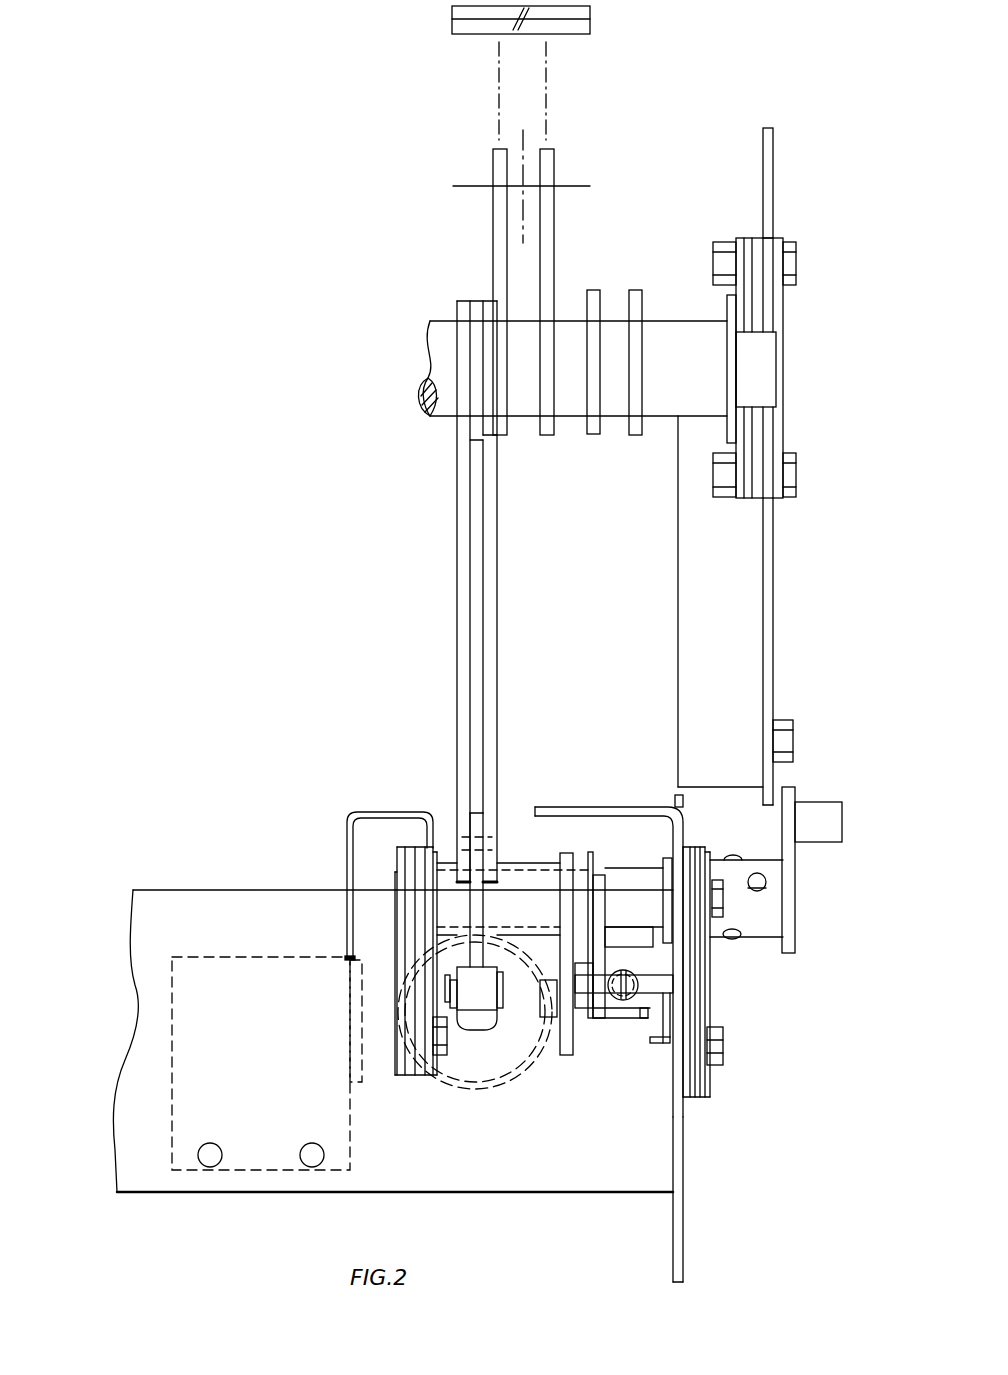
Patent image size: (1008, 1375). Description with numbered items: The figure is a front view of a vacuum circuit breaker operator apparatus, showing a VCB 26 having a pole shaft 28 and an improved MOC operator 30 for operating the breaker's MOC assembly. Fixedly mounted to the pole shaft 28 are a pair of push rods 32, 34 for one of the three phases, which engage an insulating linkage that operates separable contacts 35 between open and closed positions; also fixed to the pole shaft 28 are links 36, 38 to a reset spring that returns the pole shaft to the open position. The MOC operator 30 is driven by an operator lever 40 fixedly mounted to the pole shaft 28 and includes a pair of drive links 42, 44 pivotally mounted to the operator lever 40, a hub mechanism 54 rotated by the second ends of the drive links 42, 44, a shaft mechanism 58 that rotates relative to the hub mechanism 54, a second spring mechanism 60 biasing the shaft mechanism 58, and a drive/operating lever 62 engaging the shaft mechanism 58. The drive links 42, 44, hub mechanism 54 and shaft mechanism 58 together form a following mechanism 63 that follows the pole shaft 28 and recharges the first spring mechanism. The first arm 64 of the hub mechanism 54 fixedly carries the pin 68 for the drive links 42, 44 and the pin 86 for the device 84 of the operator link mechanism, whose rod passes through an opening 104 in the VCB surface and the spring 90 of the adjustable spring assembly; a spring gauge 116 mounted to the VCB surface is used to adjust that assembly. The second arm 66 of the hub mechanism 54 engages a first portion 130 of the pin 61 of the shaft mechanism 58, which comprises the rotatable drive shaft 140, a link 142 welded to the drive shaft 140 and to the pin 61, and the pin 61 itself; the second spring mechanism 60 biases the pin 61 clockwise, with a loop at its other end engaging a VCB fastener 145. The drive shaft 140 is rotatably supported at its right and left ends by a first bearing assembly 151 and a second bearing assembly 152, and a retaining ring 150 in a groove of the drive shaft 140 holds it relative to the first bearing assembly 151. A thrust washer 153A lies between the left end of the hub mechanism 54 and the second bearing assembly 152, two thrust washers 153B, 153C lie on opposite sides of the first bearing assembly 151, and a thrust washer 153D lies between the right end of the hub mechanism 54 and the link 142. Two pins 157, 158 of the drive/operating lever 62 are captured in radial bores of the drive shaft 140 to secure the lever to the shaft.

The VCB 26 is at (760, 1245).
The pole shaft 28 is at (432, 338).
The MOC operator 30 is at (602, 735).
The push rod 32 is at (492, 218).
The push rod 34 is at (556, 226).
The separable contacts 35 is at (578, 34).
The link 36 is at (593, 289).
The link 38 is at (636, 289).
The operator lever 40 is at (480, 300).
The drive link 42 is at (462, 547).
The drive link 44 is at (497, 543).
The hub mechanism 54 is at (508, 838).
The shaft mechanism 58 is at (607, 862).
The second spring mechanism 60 is at (617, 1000).
The pin 61 is at (604, 1045).
The drive/operating lever 62 is at (828, 947).
The following mechanism 63 is at (607, 835).
The first arm 64 is at (485, 912).
The second arm 66 is at (560, 890).
The pin 68 is at (463, 830).
The device 84 is at (470, 1008).
The pin 86 is at (445, 990).
The spring 90 is at (452, 1082).
The opening 104 is at (463, 1032).
The spring gauge 116 is at (172, 1000).
The first portion 130 is at (536, 1062).
The drive shaft 140 is at (455, 915).
The link 142 is at (600, 953).
The VCB fastener 145 is at (663, 988).
The retaining ring 150 is at (668, 898).
The first bearing assembly 151 is at (692, 848).
The second bearing assembly 152 is at (415, 872).
The thrust washer 153A is at (440, 890).
The thrust washer 153B is at (668, 858).
The thrust washer 153C is at (712, 858).
The thrust washer 153D is at (590, 855).
The pin 157 is at (729, 940).
The pin 158 is at (766, 882).